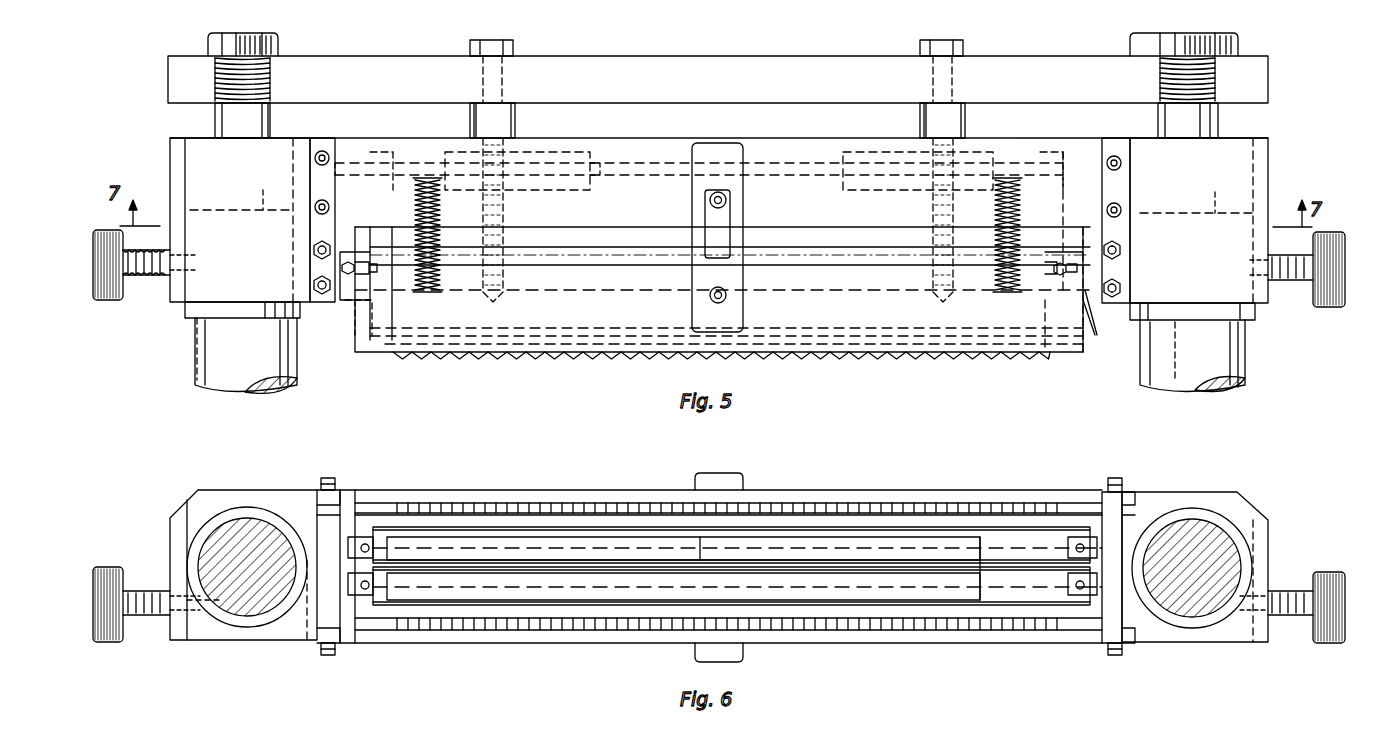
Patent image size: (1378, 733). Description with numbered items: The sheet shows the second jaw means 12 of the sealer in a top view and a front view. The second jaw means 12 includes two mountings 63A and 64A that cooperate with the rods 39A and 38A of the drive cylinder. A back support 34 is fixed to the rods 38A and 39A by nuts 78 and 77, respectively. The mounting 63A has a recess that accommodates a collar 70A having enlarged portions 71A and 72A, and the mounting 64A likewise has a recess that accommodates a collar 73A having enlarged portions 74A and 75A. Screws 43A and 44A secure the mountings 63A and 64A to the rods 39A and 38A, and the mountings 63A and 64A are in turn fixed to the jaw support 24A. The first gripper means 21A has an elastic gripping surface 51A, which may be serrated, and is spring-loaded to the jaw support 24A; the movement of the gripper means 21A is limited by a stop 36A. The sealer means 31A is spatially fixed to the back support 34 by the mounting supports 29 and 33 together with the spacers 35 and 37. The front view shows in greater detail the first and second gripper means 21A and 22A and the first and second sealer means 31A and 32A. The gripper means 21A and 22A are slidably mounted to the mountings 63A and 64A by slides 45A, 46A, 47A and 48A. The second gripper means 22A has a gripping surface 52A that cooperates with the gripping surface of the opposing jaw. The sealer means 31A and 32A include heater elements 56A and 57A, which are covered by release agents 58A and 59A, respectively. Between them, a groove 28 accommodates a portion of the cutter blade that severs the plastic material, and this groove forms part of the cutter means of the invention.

In FIG. 5, the second jaw means 12 is at (836, 321).
In FIG. 6, the second jaw means 12 is at (600, 471).
In FIG. 5, the first gripper means 21A is at (463, 346).
In FIG. 6, the first gripper means 21A is at (793, 489).
In FIG. 6, the second gripper means 22A is at (886, 644).
In FIG. 5, the jaw support 24A is at (620, 163).
In FIG. 6, the groove 28 is at (642, 559).
In FIG. 5, the mounting support 29 is at (506, 94).
In FIG. 5, the first sealer means 31A is at (632, 335).
In FIG. 6, the first sealer means 31A is at (862, 547).
In FIG. 6, the second sealer means 32A is at (938, 602).
In FIG. 5, the mounting support 33 is at (956, 94).
In FIG. 5, the back support 34 is at (667, 61).
In FIG. 5, the spacer 35 is at (518, 198).
In FIG. 5, the stop 36A is at (743, 213).
In FIG. 6, the stop 36A is at (712, 473).
In FIG. 5, the spacer 37 is at (908, 210).
In FIG. 5, the rod 38A is at (1202, 390).
In FIG. 6, the rod 38A is at (1182, 614).
In FIG. 5, the rod 39A is at (233, 386).
In FIG. 6, the rod 39A is at (248, 615).
In FIG. 5, the screw 43A is at (114, 300).
In FIG. 6, the screw 43A is at (123, 567).
In FIG. 5, the screw 44A is at (1325, 230).
In FIG. 6, the screw 44A is at (1323, 572).
In FIG. 5, the slide 45A is at (322, 220).
In FIG. 6, the slide 45A is at (357, 494).
In FIG. 5, the slide 46A is at (1116, 220).
In FIG. 6, the slide 46A is at (1081, 496).
In FIG. 6, the slide 47A is at (373, 645).
In FIG. 6, the slide 48A is at (1082, 642).
In FIG. 5, the elastic gripping surface 51A is at (532, 350).
In FIG. 6, the elastic gripping surface 51A is at (719, 509).
In FIG. 6, the gripping surface 52A is at (835, 630).
In FIG. 6, the heater element 56A is at (924, 549).
In FIG. 6, the heater element 57A is at (707, 596).
In FIG. 6, the release agent 58A is at (532, 530).
In FIG. 6, the release agent 59A is at (578, 598).
In FIG. 5, the mounting 63A is at (168, 156).
In FIG. 6, the mounting 63A is at (278, 488).
In FIG. 5, the mounting 64A is at (1266, 175).
In FIG. 6, the mounting 64A is at (1252, 492).
In FIG. 5, the collar 70A is at (210, 295).
In FIG. 5, the enlarged portion 71A is at (210, 334).
In FIG. 6, the enlarged portion 71A is at (256, 628).
In FIG. 5, the enlarged portion 72A is at (264, 190).
In FIG. 5, the collar 73A is at (1228, 298).
In FIG. 5, the enlarged portion 74A is at (1173, 322).
In FIG. 6, the enlarged portion 74A is at (1200, 623).
In FIG. 5, the enlarged portion 75A is at (1216, 206).
In FIG. 5, the nut 77 is at (280, 52).
In FIG. 5, the nut 78 is at (1130, 53).